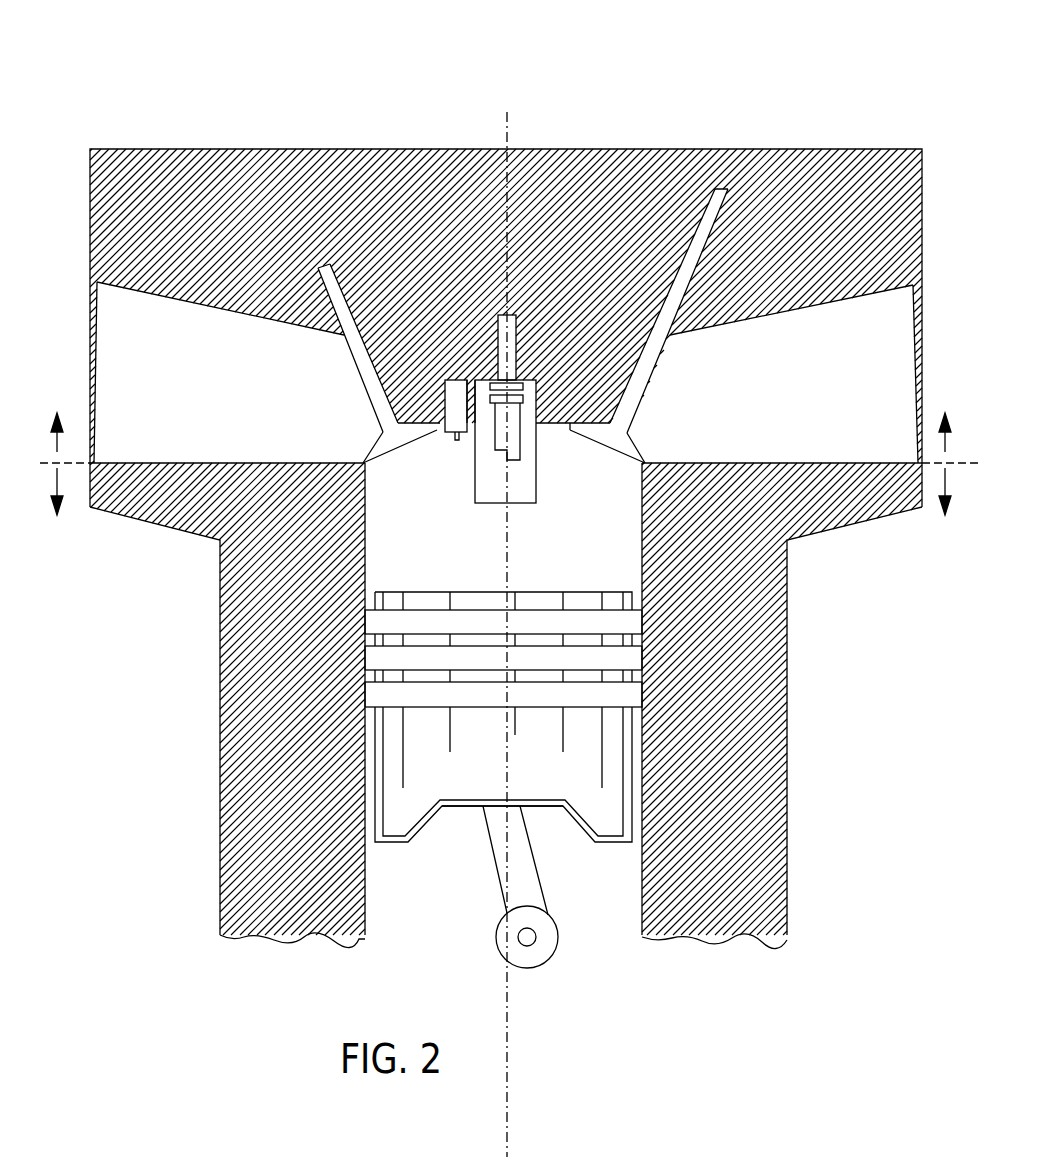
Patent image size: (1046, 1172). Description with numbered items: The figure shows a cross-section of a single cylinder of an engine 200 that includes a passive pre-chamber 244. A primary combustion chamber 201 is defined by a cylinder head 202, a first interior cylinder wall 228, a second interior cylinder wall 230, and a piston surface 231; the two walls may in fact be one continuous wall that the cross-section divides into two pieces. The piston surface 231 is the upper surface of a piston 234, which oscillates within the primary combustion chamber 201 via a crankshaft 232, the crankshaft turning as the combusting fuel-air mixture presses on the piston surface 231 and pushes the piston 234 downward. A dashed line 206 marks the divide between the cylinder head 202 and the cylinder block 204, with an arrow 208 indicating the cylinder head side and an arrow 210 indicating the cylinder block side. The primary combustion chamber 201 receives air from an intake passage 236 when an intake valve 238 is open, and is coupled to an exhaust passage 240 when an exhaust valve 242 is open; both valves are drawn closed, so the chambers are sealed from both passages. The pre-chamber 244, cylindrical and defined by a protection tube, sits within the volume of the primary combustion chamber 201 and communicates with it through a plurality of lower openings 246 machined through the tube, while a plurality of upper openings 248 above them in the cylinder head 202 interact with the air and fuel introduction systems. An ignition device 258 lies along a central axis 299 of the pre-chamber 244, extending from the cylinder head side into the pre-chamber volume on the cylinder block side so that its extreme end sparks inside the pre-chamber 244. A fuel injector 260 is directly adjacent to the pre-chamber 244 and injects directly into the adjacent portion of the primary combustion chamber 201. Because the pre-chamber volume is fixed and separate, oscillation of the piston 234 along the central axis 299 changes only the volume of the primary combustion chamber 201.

The engine 200 is at (509, 582).
The primary combustion chamber 201 is at (533, 587).
The cylinder head 202 is at (176, 148).
The cylinder block 204 is at (220, 722).
The dashed line 206 is at (92, 470).
The arrow 208 is at (62, 448).
The arrow 210 is at (78, 468).
The first interior cylinder wall 228 is at (365, 935).
The second interior cylinder wall 230 is at (642, 935).
The piston surface 231 is at (443, 590).
The crankshaft 232 is at (500, 952).
The piston 234 is at (466, 797).
The intake passage 236 is at (793, 409).
The intake valve 238 is at (657, 365).
The exhaust passage 240 is at (221, 399).
The exhaust valve 242 is at (349, 350).
The pre-chamber 244 is at (515, 503).
The plurality of lower openings 246 is at (475, 503).
The plurality of upper openings 248 is at (537, 430).
The ignition device 258 is at (512, 315).
The fuel injector 260 is at (441, 436).
The central axis 299 is at (508, 1128).